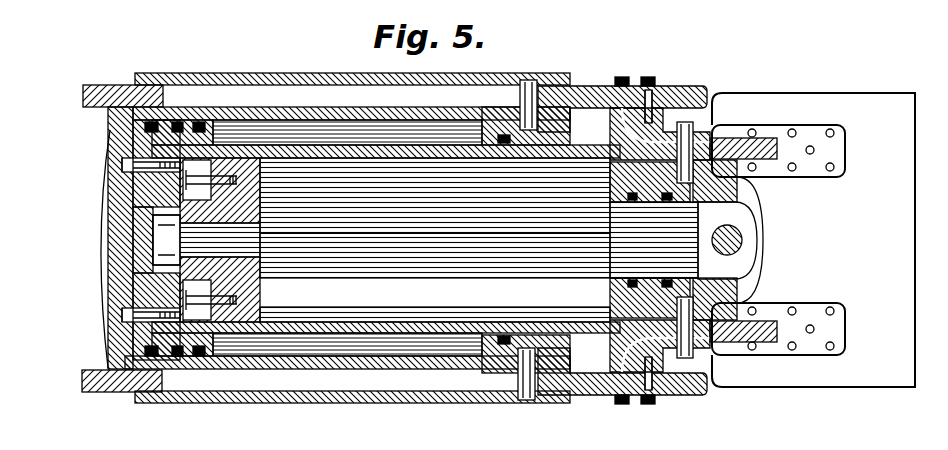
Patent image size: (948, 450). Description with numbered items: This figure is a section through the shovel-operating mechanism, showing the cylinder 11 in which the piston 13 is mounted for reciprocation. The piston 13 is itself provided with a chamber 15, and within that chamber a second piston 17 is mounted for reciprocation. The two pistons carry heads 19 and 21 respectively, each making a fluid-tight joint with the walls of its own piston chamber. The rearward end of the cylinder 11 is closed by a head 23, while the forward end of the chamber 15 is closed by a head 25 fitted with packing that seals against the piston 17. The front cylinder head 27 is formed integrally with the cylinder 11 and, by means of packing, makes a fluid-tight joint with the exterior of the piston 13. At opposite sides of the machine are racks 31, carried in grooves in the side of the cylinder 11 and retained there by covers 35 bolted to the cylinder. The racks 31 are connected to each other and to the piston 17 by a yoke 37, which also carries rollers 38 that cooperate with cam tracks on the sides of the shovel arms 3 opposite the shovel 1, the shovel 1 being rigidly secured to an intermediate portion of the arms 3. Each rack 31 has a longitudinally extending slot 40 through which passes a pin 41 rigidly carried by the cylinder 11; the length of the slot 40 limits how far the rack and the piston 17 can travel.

The shovel 1 is at (900, 138).
The shovel arms 3 is at (767, 138).
The cylinder 11 is at (350, 110).
The piston 13 is at (328, 327).
The chamber 15 is at (425, 254).
The piston 17 is at (475, 262).
The head 19 is at (108, 137).
The head 21 is at (262, 284).
The head 23 is at (125, 168).
The head 25 is at (610, 288).
The front cylinder head 27 is at (582, 371).
The racks 31 is at (580, 90).
The covers 35 is at (370, 397).
The yoke 37 is at (750, 188).
The rollers 38 is at (713, 138).
The slot 40 is at (460, 384).
The pin 41 is at (530, 80).